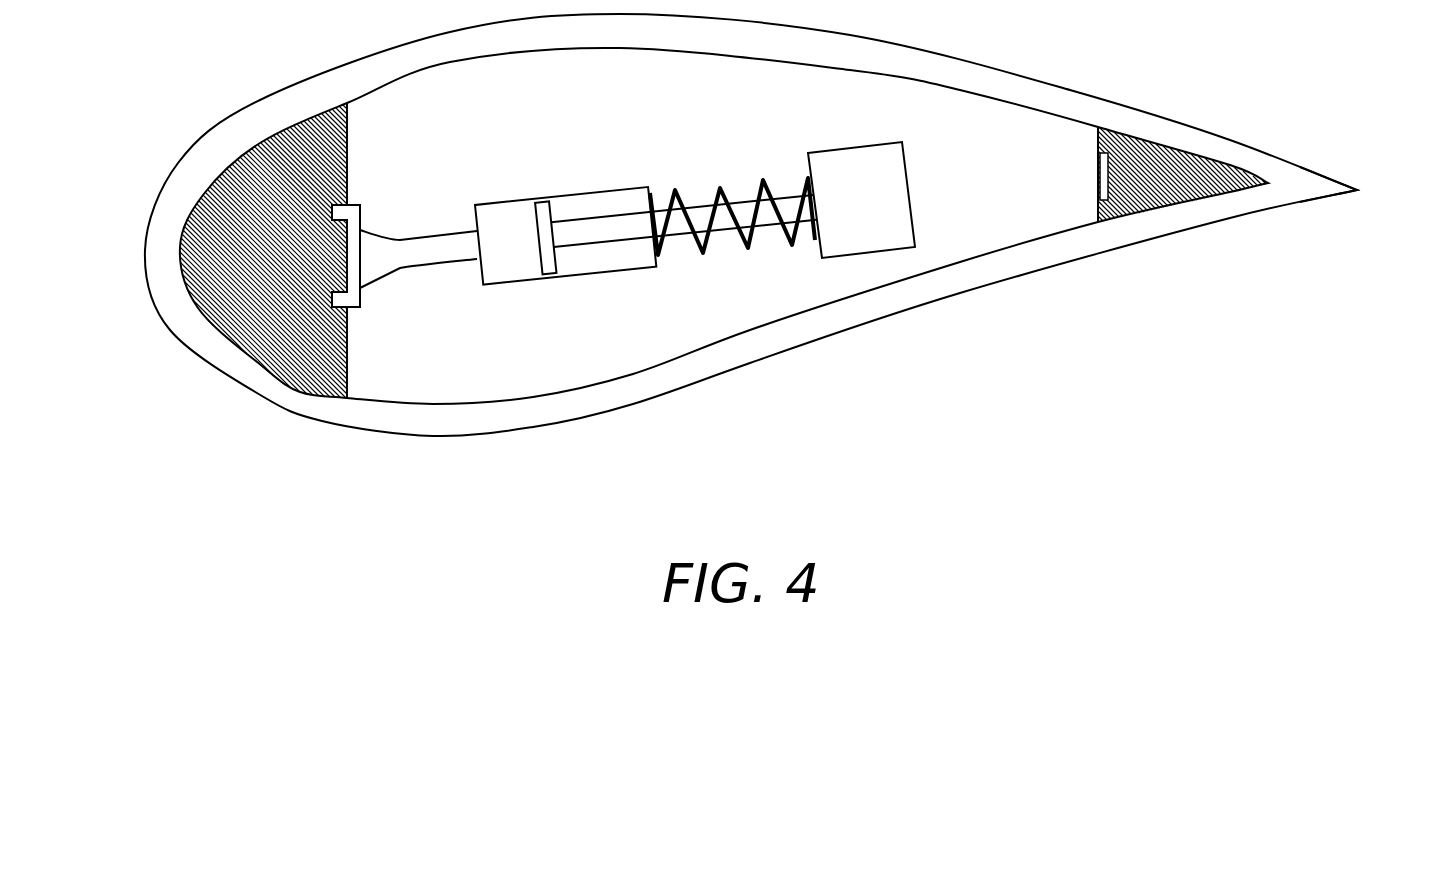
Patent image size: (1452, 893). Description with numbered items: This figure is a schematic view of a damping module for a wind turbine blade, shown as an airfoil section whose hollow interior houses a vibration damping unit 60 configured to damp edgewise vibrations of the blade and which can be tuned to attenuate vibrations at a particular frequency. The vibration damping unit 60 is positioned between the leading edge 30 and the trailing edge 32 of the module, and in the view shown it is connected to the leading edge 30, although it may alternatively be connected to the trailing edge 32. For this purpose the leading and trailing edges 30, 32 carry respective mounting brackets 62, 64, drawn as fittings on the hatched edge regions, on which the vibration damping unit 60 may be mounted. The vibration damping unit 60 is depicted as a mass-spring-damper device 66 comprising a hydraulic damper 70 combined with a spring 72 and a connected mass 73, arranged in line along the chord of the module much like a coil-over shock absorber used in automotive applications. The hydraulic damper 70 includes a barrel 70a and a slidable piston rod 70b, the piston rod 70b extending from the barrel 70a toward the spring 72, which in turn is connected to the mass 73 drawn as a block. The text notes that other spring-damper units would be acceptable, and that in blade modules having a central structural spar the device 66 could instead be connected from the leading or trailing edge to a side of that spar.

The leading edge 30 is at (143, 258).
The trailing edge 32 is at (1360, 190).
The vibration damping unit 60 is at (720, 238).
The mounting bracket 62 is at (398, 284).
The mounting bracket 64 is at (1084, 206).
The mass-spring-damper device 66 is at (617, 278).
The hydraulic damper 70 is at (639, 241).
The barrel 70a is at (598, 190).
The slidable piston rod 70b is at (620, 235).
The spring 72 is at (755, 235).
The mass 73 is at (887, 215).